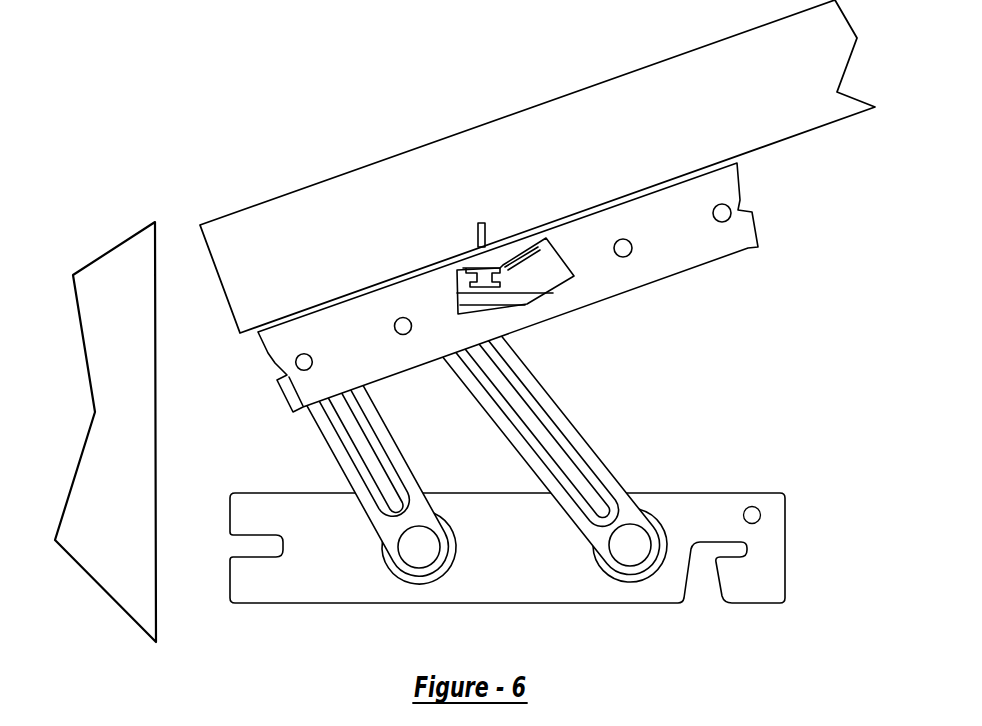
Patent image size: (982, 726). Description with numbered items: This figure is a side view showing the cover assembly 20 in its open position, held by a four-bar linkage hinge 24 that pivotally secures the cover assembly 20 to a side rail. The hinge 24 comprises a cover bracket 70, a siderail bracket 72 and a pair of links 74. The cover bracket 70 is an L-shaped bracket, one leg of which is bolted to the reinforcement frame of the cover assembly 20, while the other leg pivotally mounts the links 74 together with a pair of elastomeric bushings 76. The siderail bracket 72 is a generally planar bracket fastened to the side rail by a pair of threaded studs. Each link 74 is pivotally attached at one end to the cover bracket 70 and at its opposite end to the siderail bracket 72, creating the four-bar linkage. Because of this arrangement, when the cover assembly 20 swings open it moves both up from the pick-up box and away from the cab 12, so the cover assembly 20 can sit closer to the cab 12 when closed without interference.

The cab 12 is at (122, 536).
The cover assembly 20 is at (598, 152).
The four-bar linkage hinge 24 is at (362, 630).
The cover bracket 70 is at (627, 273).
The siderail bracket 72 is at (577, 583).
The links 74 is at (329, 446).
The elastomeric bushings 76 is at (490, 288).